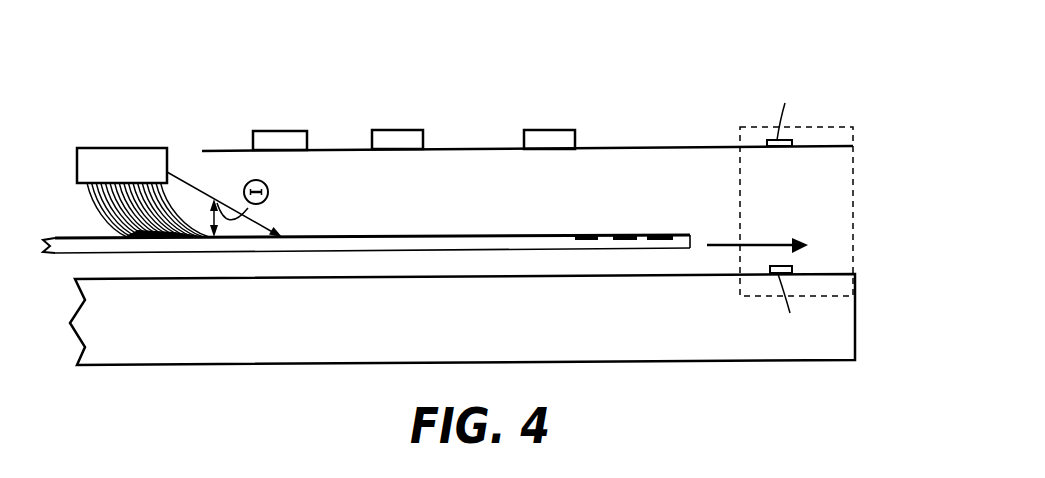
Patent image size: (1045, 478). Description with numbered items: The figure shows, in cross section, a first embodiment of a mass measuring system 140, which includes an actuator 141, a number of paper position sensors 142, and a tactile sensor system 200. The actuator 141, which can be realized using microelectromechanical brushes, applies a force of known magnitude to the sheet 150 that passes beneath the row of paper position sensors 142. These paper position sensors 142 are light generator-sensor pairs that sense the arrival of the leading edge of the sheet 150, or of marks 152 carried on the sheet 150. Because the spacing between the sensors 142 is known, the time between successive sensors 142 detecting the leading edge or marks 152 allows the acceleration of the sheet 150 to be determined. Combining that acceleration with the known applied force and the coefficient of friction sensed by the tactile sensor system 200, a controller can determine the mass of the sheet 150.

The mass measuring system 140 is at (652, 91).
The actuator 141 is at (120, 147).
The paper position sensors 142 is at (270, 131).
The sheet 150 is at (363, 235).
The marks 152 is at (662, 235).
The tactile sensor system 200 is at (853, 215).